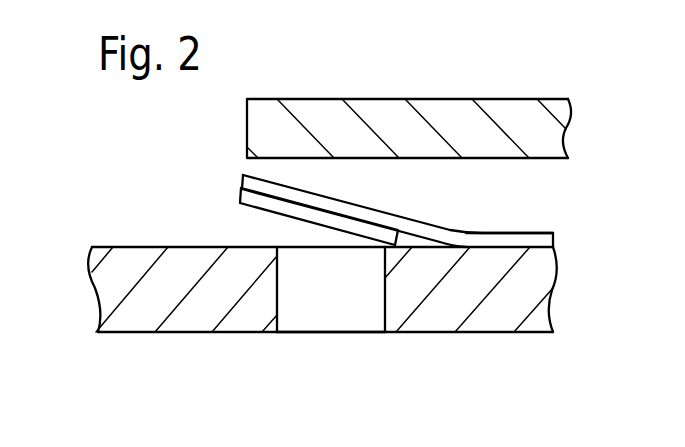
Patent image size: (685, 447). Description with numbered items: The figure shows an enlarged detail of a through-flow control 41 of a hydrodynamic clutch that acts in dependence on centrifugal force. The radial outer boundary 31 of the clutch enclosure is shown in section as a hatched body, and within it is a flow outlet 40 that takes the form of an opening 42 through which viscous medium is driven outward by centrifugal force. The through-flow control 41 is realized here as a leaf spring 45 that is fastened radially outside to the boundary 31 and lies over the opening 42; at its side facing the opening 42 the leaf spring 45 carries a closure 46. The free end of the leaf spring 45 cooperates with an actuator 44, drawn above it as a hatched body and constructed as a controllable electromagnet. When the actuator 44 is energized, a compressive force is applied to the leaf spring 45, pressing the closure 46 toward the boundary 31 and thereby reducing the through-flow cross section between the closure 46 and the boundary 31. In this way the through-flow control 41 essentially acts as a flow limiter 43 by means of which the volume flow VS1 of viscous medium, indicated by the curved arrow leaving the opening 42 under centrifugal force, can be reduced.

The radial outer boundary 31 is at (353, 341).
The flow outlet 40 is at (378, 313).
The through-flow control 41 is at (453, 81).
The opening 42 is at (363, 315).
The flow limiter 43 is at (397, 143).
The actuator 44 is at (562, 130).
The leaf spring 45 is at (460, 237).
The closure 46 is at (248, 199).
The volume flow VS1 is at (250, 225).